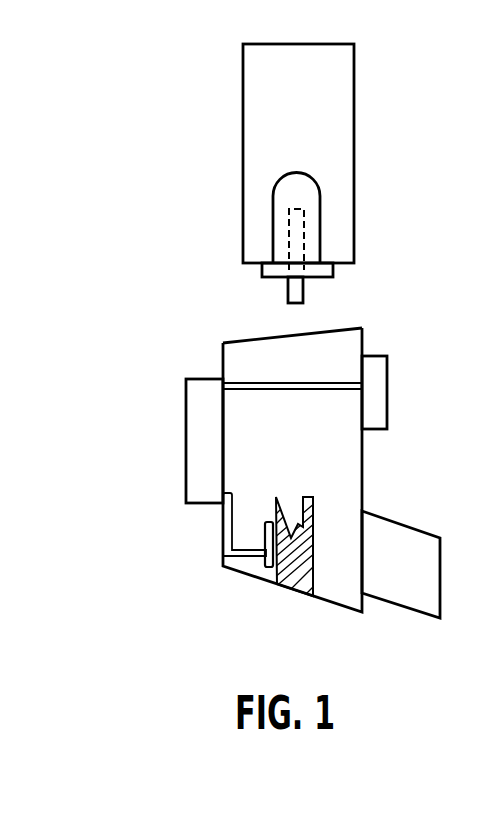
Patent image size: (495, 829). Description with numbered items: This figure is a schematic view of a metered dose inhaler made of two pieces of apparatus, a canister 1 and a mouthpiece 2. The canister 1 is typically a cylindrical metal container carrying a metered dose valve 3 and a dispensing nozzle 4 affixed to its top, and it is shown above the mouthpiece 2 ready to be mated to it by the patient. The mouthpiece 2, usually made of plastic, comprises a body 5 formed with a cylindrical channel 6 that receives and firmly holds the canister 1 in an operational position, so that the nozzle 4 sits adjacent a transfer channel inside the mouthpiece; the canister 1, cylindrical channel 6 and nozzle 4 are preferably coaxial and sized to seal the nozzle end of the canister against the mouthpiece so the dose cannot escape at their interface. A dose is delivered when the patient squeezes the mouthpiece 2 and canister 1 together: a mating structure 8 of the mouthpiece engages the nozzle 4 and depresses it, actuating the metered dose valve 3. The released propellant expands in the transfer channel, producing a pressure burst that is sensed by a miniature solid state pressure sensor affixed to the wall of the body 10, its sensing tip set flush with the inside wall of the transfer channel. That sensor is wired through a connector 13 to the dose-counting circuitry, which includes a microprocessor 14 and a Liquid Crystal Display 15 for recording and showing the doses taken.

The canister 1 is at (340, 125).
The mouthpiece 2 is at (268, 451).
The metered dose valve 3 is at (321, 224).
The dispensing nozzle 4 is at (304, 288).
The body 5 is at (340, 463).
The cylindrical channel 6 is at (323, 328).
The mating structure 8 is at (290, 512).
The body 10 is at (292, 590).
The connector 13 is at (230, 566).
The microprocessor 14 is at (197, 397).
The Liquid Crystal Display (LCD) 15 is at (388, 398).